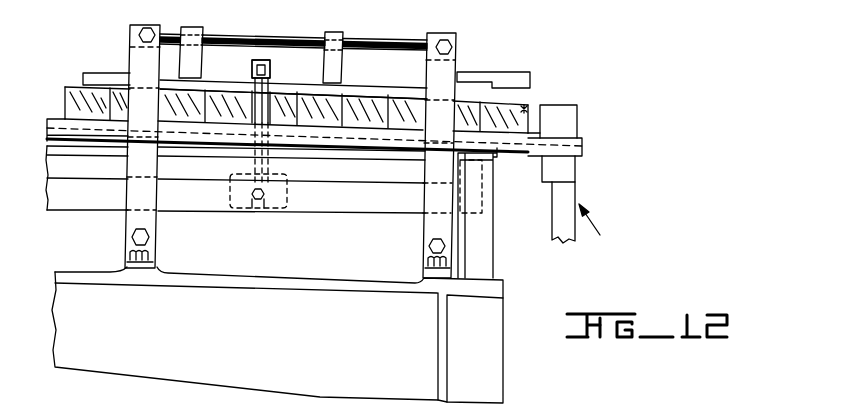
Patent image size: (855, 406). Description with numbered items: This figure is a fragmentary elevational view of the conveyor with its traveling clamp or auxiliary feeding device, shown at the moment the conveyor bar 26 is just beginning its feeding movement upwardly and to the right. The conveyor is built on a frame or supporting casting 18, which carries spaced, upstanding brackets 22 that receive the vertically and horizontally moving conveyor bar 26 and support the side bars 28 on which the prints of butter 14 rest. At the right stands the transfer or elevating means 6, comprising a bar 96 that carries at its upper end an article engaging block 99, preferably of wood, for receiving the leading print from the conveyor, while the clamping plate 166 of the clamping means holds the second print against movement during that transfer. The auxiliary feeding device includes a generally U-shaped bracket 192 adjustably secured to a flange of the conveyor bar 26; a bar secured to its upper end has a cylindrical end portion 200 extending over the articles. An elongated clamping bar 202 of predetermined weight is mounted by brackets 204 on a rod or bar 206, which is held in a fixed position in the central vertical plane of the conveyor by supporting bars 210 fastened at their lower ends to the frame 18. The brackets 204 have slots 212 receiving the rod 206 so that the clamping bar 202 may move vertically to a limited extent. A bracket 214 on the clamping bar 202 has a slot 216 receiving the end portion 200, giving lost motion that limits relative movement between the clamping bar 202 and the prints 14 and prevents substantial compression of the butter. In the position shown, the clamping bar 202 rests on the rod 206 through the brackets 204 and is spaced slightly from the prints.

The transfer or elevating means 6 is at (596, 226).
The prints of butter 14 is at (535, 103).
The frame or supporting casting 18 is at (127, 358).
The bracket 22 is at (486, 247).
The conveyor bar 26 is at (78, 192).
The side bars 28 is at (582, 147).
The bar 96 is at (562, 208).
The article engaging block 99 is at (567, 163).
The clamping plate 166 is at (525, 82).
The U-shaped bracket 192 is at (297, 114).
The cylindrical end portion 200 is at (253, 67).
The clamping bar 202 is at (90, 75).
The bracket 204 is at (190, 62).
The rod or bar 206 is at (362, 42).
The supporting bar 210 is at (133, 217).
The slot 212 is at (204, 42).
The bracket 214 is at (270, 63).
The slot 216 is at (270, 72).